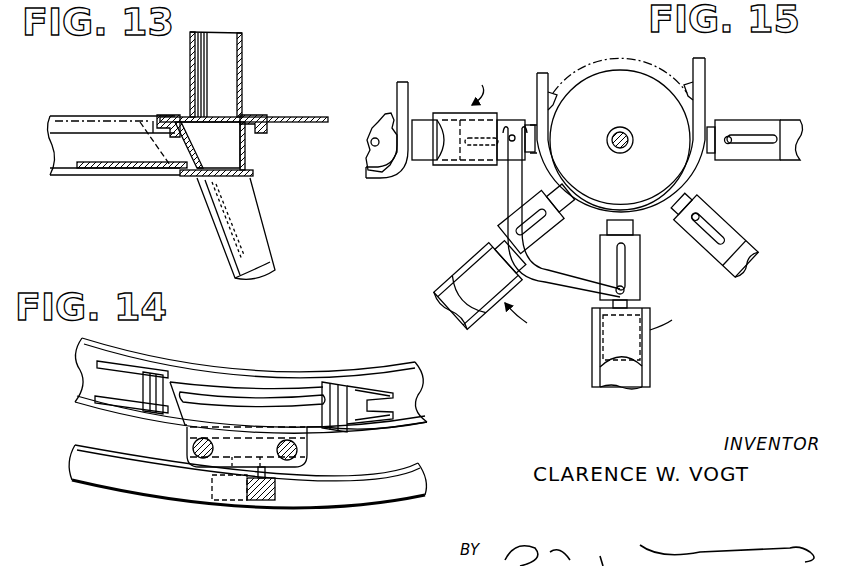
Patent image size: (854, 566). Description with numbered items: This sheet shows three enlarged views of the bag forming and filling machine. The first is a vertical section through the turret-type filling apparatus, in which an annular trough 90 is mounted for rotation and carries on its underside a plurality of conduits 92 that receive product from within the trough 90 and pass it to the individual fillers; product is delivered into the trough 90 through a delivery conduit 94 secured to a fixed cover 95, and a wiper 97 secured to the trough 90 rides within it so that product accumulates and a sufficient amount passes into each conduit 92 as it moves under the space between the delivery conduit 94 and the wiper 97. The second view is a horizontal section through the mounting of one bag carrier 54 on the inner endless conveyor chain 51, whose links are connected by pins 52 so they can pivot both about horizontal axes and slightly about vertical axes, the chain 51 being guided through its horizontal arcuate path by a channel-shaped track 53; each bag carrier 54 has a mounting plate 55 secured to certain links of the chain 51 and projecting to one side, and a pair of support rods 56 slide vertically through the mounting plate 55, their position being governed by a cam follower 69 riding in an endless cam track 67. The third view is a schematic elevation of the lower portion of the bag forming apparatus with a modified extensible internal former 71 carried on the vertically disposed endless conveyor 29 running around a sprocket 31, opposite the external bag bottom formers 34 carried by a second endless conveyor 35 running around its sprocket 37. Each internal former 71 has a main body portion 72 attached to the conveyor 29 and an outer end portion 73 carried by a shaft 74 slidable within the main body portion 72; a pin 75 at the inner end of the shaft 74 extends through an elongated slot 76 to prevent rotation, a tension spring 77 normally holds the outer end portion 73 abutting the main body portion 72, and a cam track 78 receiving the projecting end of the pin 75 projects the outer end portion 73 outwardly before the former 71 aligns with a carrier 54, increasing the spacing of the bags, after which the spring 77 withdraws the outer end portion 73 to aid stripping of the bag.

In FIG. 15, the endless conveyor 29 is at (703, 67).
In FIG. 15, the sprocket 31 is at (560, 92).
In FIG. 15, the external bag bottom former 34 is at (423, 153).
In FIG. 15, the endless conveyor 35 is at (413, 85).
In FIG. 15, the sprocket 37 is at (375, 160).
In FIG. 14, the endless conveyor chain 51 is at (375, 418).
In FIG. 14, the pin 52 is at (160, 368).
In FIG. 14, the channel-shaped track 53 is at (400, 360).
In FIG. 15, the bag carrier 54 is at (637, 387).
In FIG. 14, the mounting plate 55 is at (308, 452).
In FIG. 14, the support rod 56 is at (190, 448).
In FIG. 14, the cam track 67 is at (180, 497).
In FIG. 14, the cam follower 69 is at (268, 503).
In FIG. 15, the internal former 71 is at (512, 115).
In FIG. 15, the main body portion 72 is at (733, 120).
In FIG. 15, the outer end portion 73 is at (790, 157).
In FIG. 15, the shaft 74 is at (482, 282).
In FIG. 15, the pin 75 is at (727, 160).
In FIG. 15, the elongated slot 76 is at (758, 145).
In FIG. 15, the tension spring 77 is at (637, 305).
In FIG. 15, the cam track 78 is at (553, 267).
In FIG. 13, the annular trough 90 is at (245, 150).
In FIG. 13, the conduit 92 is at (262, 208).
In FIG. 13, the delivery conduit 94 is at (243, 58).
In FIG. 13, the fixed cover 95 is at (163, 115).
In FIG. 13, the wiper 97 is at (188, 132).